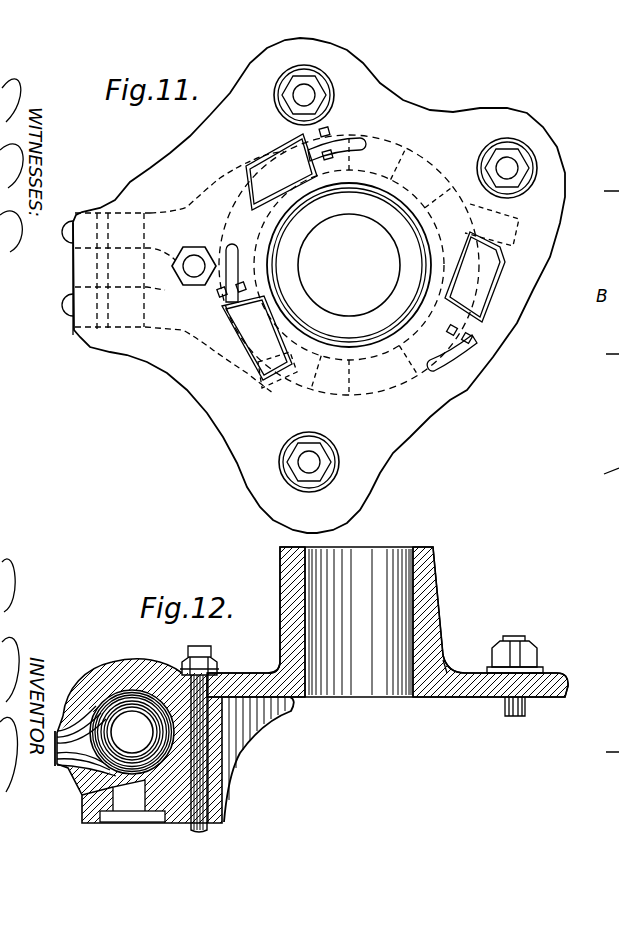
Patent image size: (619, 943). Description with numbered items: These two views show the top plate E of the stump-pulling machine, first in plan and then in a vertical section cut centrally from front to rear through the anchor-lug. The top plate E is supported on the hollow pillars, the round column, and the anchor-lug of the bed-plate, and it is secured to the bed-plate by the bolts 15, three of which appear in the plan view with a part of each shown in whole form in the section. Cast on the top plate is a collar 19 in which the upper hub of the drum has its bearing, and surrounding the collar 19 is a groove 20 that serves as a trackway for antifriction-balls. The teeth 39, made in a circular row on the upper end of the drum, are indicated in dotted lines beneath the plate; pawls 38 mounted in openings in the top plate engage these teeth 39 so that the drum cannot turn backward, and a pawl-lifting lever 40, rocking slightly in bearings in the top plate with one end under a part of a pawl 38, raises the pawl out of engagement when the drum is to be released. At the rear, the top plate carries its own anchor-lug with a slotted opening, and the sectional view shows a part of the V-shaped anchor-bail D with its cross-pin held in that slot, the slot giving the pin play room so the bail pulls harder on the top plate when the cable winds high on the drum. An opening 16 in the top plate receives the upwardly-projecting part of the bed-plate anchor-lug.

In FIG. 11, the bolts 15 is at (354, 278).
In FIG. 11, the collar 19 is at (349, 265).
In FIG. 12, the collar 19 is at (280, 617).
In FIG. 11, the top plate E is at (319, 285).
In FIG. 12, the top plate E is at (236, 672).
In FIG. 11, the pawls 38 is at (363, 257).
In FIG. 11, the teeth 39 is at (388, 265).
In FIG. 11, the pawl-lifting lever 40 is at (480, 327).
In FIG. 12, the groove 20 is at (270, 673).
In FIG. 12, the anchor-bail D is at (80, 736).
In FIG. 12, the opening 16 is at (160, 818).